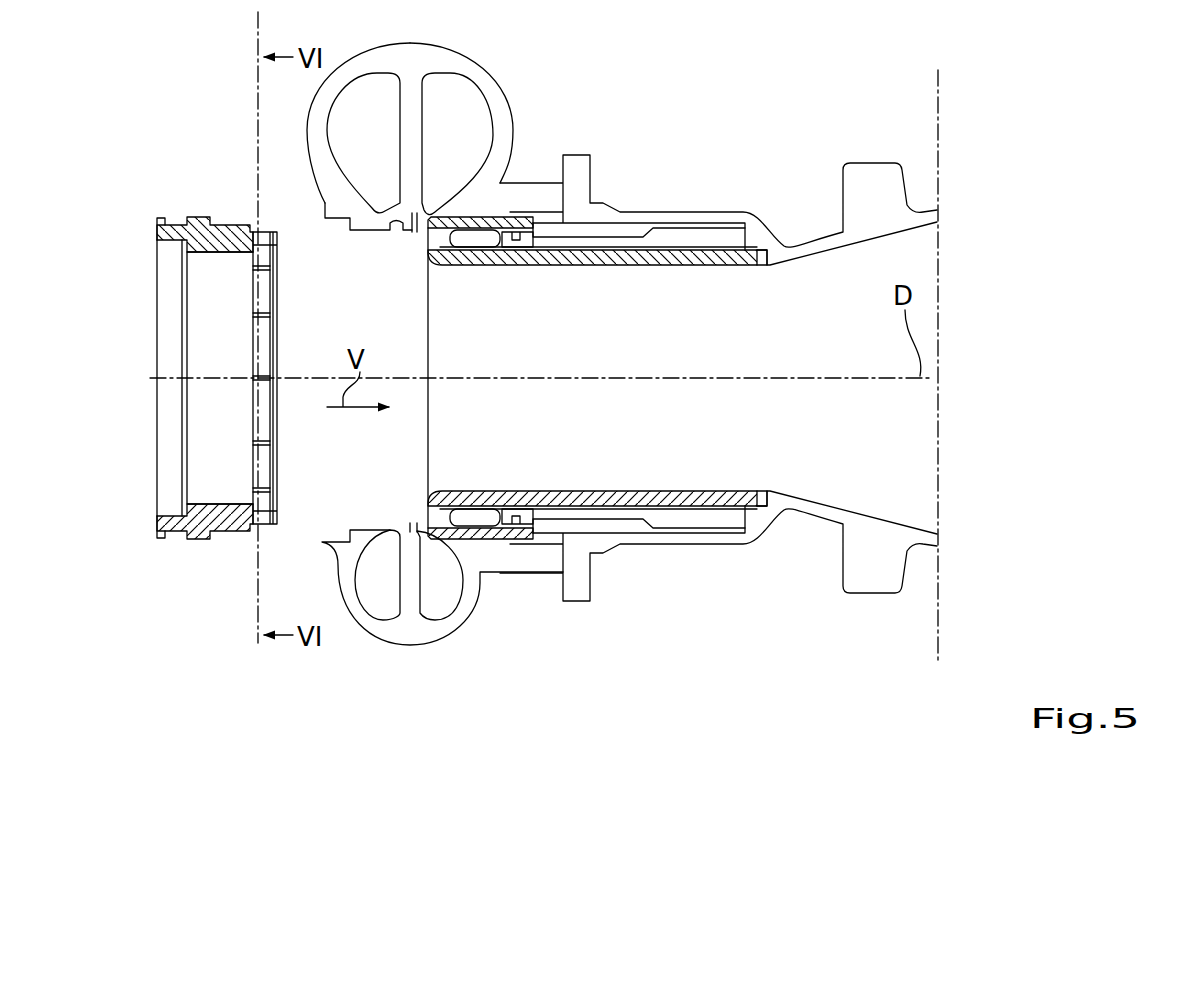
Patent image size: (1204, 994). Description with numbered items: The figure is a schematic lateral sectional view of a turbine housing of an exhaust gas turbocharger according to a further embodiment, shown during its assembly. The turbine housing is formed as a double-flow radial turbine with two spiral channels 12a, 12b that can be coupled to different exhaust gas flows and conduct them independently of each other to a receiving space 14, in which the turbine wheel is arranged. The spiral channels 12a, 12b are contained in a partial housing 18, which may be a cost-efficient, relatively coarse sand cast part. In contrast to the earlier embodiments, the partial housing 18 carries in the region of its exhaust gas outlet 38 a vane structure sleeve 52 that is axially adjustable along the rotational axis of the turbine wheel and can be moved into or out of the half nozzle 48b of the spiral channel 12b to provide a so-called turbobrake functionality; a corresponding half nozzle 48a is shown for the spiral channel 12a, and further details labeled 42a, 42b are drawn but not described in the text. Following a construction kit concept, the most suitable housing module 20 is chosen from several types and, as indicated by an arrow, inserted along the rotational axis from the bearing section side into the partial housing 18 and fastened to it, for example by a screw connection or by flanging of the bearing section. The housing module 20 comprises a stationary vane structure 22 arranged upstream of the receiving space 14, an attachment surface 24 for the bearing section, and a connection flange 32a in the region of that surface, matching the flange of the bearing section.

The spiral channel 12a is at (369, 116).
The spiral channel 12b is at (452, 113).
The receiving space 14 is at (236, 334).
The partial housing 18 is at (548, 136).
The housing module 20 is at (200, 216).
The vane structure 22 is at (265, 290).
The attachment surface 24 is at (156, 230).
The connection flange 32a is at (162, 216).
The exhaust gas outlet 38 is at (731, 334).
The sealing ring 42a is at (272, 231).
The membrane web 42b is at (412, 233).
The first cavity 48a is at (384, 206).
The half nozzle 48b is at (433, 204).
The vane structure sleeve 52 is at (703, 521).